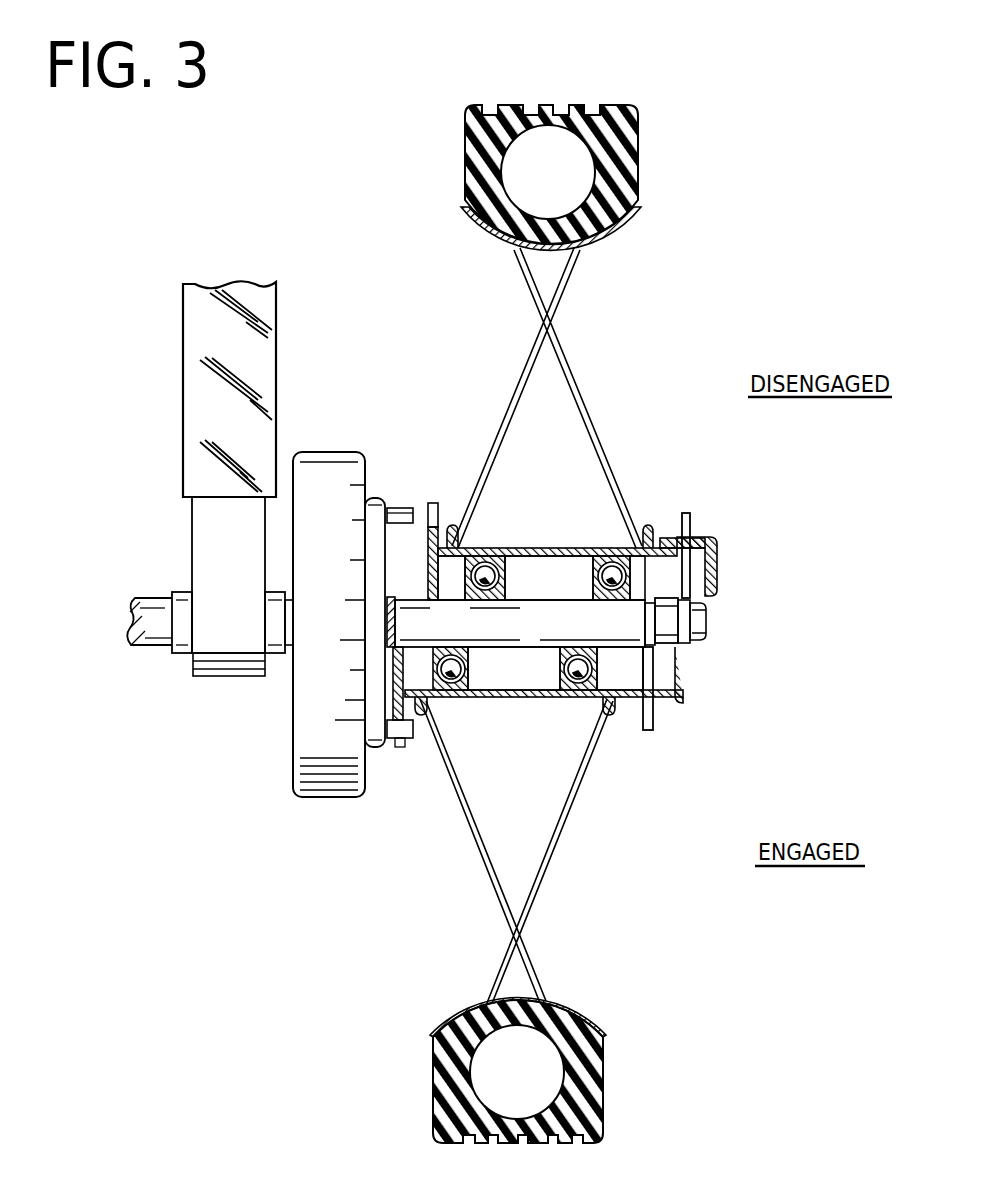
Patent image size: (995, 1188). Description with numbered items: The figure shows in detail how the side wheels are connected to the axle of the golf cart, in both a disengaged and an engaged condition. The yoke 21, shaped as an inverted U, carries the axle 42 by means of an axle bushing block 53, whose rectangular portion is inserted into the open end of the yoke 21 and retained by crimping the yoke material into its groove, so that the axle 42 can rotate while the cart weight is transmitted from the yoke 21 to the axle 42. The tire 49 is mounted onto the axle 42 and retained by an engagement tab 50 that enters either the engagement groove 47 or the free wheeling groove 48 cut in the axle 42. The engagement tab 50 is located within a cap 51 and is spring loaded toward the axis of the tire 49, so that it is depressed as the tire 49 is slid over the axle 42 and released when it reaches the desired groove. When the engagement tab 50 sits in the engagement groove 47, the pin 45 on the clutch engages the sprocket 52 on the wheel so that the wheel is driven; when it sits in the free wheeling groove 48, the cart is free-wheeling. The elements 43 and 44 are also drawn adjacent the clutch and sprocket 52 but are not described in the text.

The yoke 21 is at (190, 350).
The axle 42 is at (700, 622).
The pulley 43 is at (325, 452).
The flange disk 44 is at (376, 498).
The pin 45 is at (400, 508).
The engagement groove 47 is at (650, 595).
The free wheeling groove 48 is at (686, 650).
The tire 49 is at (598, 105).
The engagement tab 50 is at (686, 513).
The cap 51 is at (713, 545).
The sprocket 52 is at (433, 503).
The axle bushing block 53 is at (235, 660).